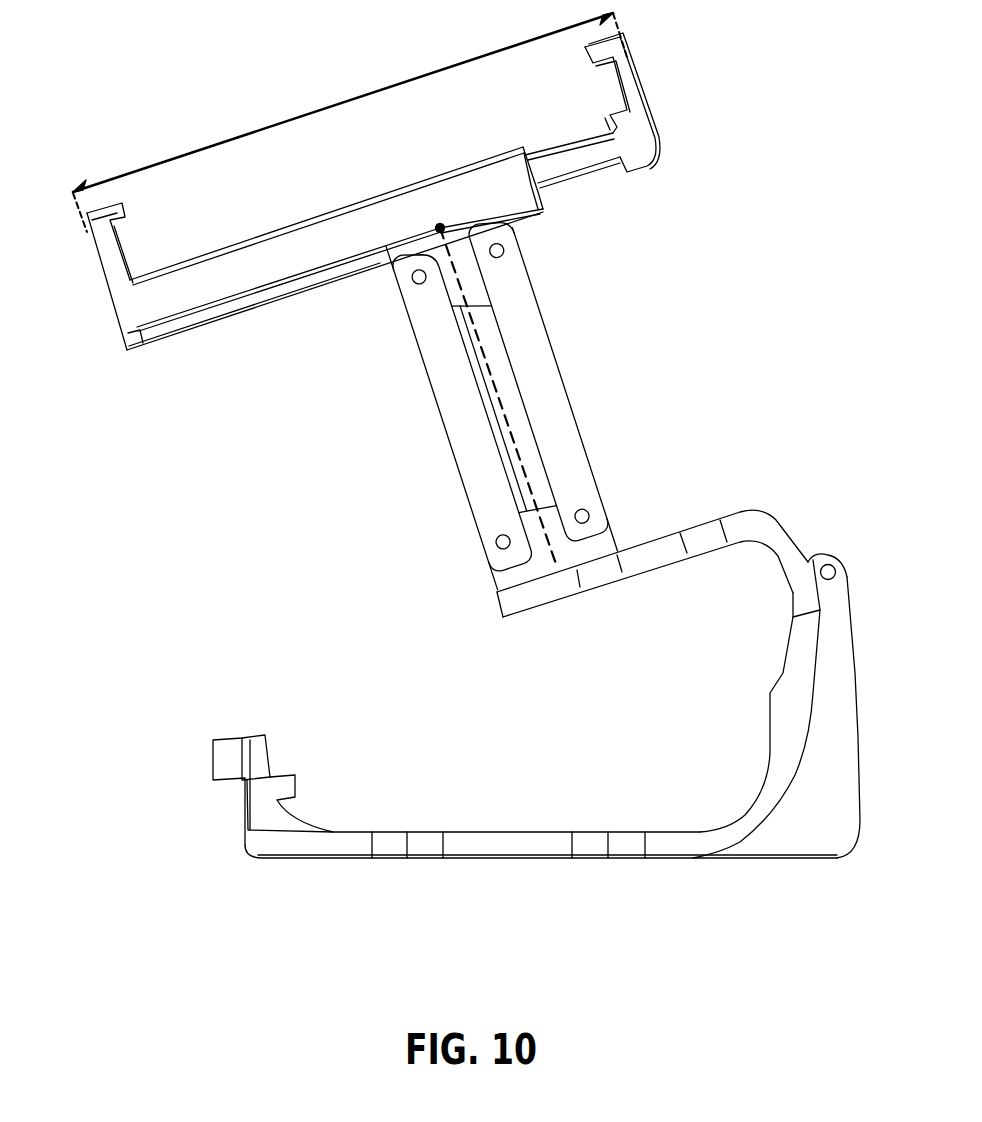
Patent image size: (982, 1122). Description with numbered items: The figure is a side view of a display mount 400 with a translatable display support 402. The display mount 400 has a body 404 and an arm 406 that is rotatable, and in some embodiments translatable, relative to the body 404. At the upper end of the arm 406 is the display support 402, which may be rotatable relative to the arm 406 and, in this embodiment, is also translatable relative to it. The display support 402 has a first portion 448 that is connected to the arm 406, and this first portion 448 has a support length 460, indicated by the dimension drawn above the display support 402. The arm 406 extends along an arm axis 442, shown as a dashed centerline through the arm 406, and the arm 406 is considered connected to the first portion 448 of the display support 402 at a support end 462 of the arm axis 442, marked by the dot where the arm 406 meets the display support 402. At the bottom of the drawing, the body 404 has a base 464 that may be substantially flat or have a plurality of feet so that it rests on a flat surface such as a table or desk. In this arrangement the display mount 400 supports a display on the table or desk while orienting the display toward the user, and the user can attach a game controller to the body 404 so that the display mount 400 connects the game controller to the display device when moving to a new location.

The display mount 400 is at (720, 197).
The display support 402 is at (131, 357).
The body 404 is at (798, 513).
The arm 406 is at (583, 375).
The arm axis 442 is at (470, 307).
The first portion 448 is at (188, 292).
The support length 460 is at (322, 108).
The support end 462 is at (438, 230).
The base 464 is at (493, 861).